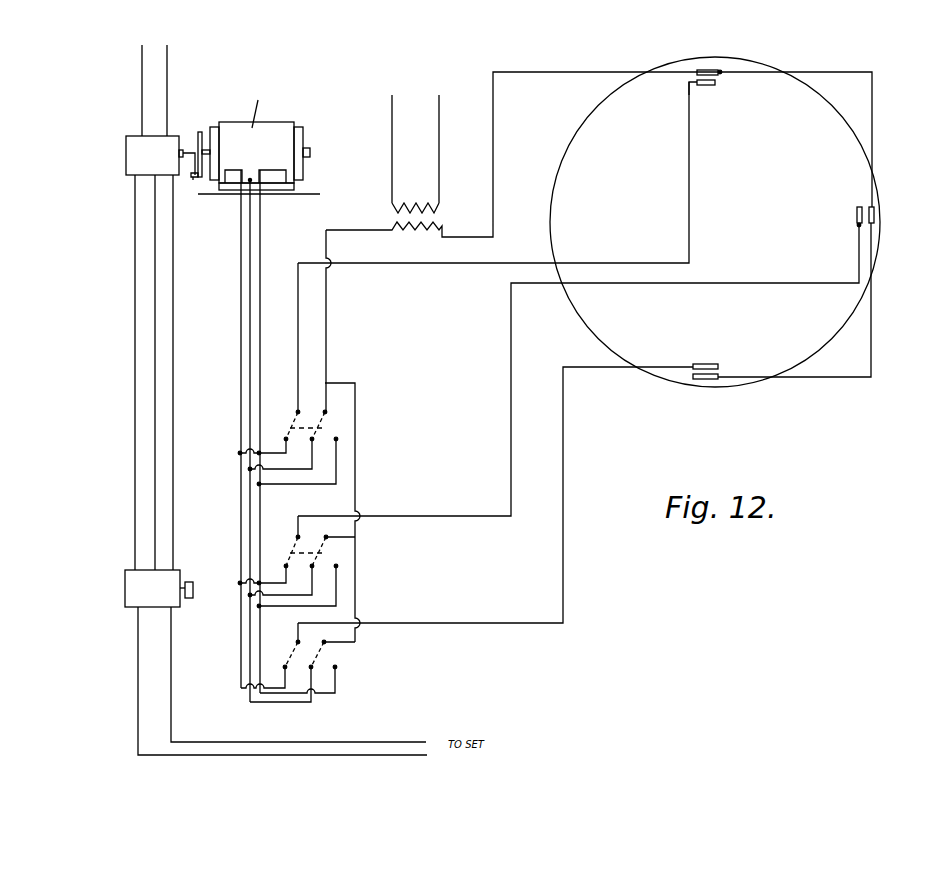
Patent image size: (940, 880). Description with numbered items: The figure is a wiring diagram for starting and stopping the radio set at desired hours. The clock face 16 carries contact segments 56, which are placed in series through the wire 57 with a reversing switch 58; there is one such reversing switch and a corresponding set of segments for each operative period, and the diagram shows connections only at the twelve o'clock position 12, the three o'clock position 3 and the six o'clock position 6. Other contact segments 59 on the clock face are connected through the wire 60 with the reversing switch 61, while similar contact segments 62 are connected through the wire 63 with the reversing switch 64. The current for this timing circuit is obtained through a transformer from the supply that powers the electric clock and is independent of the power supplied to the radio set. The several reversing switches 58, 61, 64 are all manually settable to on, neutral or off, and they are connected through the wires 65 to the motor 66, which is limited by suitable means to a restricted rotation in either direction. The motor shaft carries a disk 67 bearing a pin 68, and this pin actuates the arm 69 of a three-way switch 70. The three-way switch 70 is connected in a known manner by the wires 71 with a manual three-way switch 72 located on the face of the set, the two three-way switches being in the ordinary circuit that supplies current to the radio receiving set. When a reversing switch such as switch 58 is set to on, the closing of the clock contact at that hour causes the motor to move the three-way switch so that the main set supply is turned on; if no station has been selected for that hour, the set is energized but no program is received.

The three o'clock connection 3 is at (845, 218).
The six o'clock connection 6 is at (705, 356).
The twelve o'clock connection 12 is at (704, 95).
The clock face 16 is at (715, 222).
The contact segments 56 is at (720, 73).
The wire 57 is at (378, 263).
The reversing switch 58 is at (288, 374).
The contact segments 59 is at (872, 207).
The wire 60 is at (578, 370).
The reversing switch 61 is at (296, 562).
The contact segments 62 is at (708, 380).
The wire 63 is at (495, 495).
The reversing switch 64 is at (298, 662).
The wires 65 is at (258, 322).
The motor 66 is at (270, 128).
The disk 67 is at (205, 132).
The pin 68 is at (196, 180).
The arm 69 is at (188, 152).
The three-way switch 70 is at (126, 160).
The wires 71 is at (173, 296).
The manual three-way switch 72 is at (125, 588).